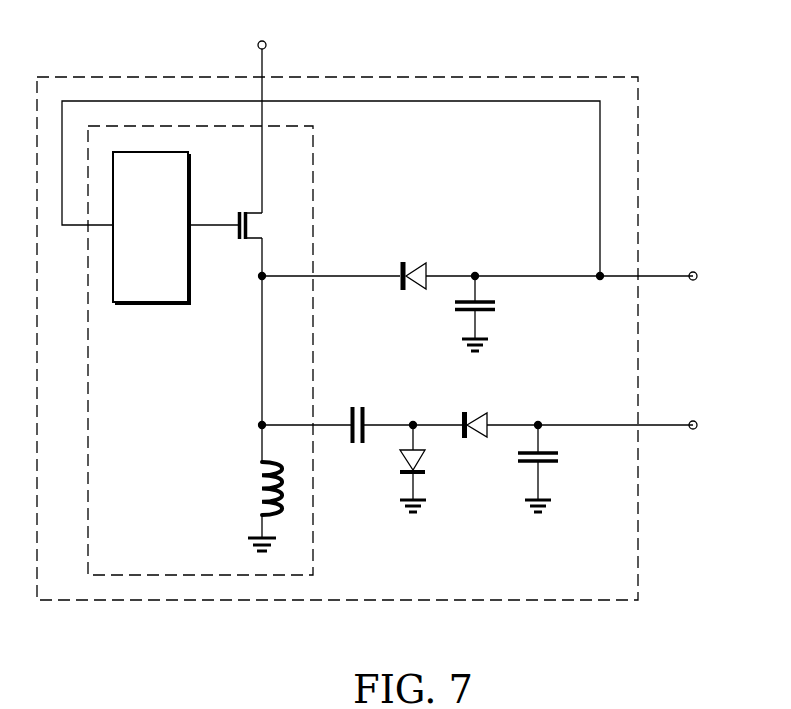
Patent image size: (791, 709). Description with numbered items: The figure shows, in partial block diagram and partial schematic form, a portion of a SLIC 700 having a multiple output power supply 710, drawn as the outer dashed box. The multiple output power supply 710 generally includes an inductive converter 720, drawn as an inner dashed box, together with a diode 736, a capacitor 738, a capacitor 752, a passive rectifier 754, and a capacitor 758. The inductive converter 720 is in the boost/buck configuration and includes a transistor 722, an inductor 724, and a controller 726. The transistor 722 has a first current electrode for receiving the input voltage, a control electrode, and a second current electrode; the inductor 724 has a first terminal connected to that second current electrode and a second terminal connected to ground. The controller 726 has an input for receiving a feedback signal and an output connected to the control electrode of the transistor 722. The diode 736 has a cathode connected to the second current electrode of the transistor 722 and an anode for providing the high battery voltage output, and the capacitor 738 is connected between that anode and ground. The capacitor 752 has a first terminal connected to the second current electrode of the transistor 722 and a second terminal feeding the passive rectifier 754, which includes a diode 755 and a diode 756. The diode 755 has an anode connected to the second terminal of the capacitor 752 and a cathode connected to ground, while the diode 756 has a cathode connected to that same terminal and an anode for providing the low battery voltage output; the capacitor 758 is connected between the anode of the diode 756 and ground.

The SLIC 700 is at (409, 331).
The multiple output power supply 710 is at (542, 77).
The inductive converter 720 is at (313, 160).
The transistor 722 is at (252, 222).
The inductor 724 is at (261, 475).
The controller 726 is at (148, 303).
The diode 736 is at (404, 262).
The capacitor 738 is at (496, 307).
The capacitor 752 is at (352, 406).
The passive rectifier 754 is at (472, 425).
The diode 755 is at (401, 460).
The diode 756 is at (464, 438).
The capacitor 758 is at (559, 458).